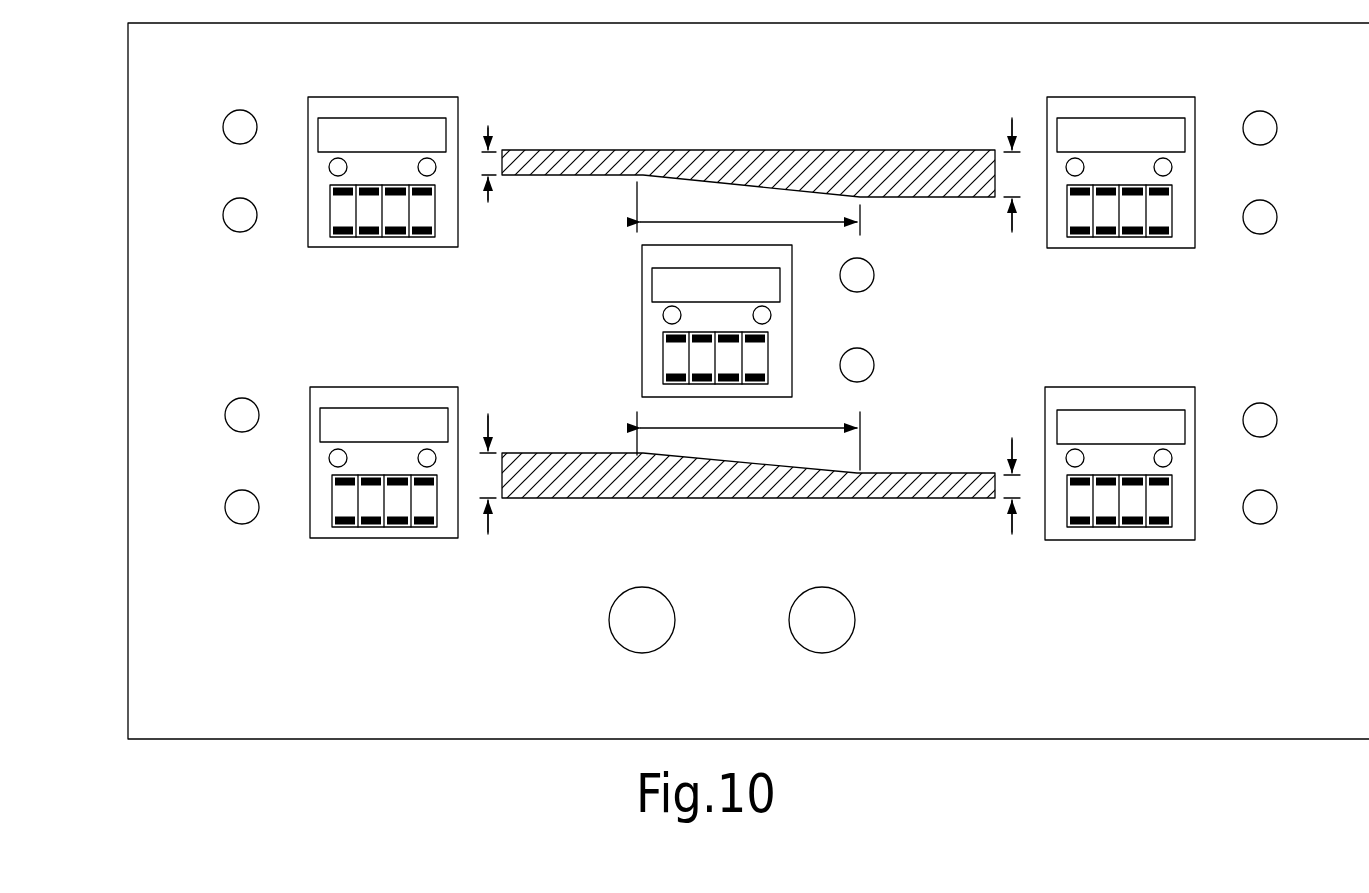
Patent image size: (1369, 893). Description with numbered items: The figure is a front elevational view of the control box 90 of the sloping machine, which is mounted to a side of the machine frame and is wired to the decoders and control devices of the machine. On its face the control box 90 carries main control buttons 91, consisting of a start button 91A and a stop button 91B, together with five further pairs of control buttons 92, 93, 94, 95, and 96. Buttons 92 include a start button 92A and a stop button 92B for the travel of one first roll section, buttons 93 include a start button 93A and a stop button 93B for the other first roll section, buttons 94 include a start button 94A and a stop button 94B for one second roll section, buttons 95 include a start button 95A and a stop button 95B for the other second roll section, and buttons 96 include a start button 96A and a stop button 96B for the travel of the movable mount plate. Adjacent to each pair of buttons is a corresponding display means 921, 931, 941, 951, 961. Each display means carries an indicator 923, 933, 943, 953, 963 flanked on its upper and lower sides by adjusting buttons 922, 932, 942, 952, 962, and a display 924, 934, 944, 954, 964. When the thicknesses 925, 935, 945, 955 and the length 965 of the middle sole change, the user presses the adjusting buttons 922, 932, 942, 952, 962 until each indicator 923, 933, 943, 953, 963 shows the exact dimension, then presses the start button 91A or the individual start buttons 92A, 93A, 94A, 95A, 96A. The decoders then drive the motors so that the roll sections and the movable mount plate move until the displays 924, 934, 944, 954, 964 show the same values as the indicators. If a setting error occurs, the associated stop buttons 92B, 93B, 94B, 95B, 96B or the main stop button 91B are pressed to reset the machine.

The control box 90 is at (110, 347).
The main control buttons 91 is at (862, 648).
The start button 91A is at (648, 605).
The stop button 91B is at (838, 600).
The control buttons 92 is at (212, 172).
The start button 92A is at (232, 120).
The stop button 92B is at (228, 220).
The display means 921 is at (428, 108).
The adjusting buttons 922 is at (437, 228).
The indicator 923 is at (333, 210).
The display 924 is at (440, 128).
The thickness 925 is at (506, 152).
The control buttons 93 is at (216, 460).
The start button 93A is at (250, 410).
The stop button 93B is at (228, 512).
The display means 931 is at (420, 398).
The adjusting buttons 932 is at (438, 520).
The indicator 933 is at (335, 500).
The display 934 is at (442, 420).
The thickness 935 is at (500, 452).
The control buttons 94 is at (1286, 175).
The start button 94A is at (1275, 122).
The stop button 94B is at (1275, 225).
The display means 941 is at (1168, 105).
The adjusting buttons 942 is at (1067, 230).
The indicator 943 is at (1173, 213).
The display 944 is at (1178, 128).
The thickness 945 is at (1008, 155).
The control buttons 95 is at (1290, 468).
The start button 95A is at (1272, 415).
The stop button 95B is at (1275, 515).
The display means 951 is at (1168, 398).
The adjusting buttons 952 is at (1067, 520).
The indicator 953 is at (1173, 508).
The display 954 is at (1180, 422).
The thickness 955 is at (1008, 475).
The control buttons 96 is at (876, 266).
The start button 96A is at (872, 282).
The stop button 96B is at (866, 365).
The display means 961 is at (645, 272).
The adjusting buttons 962 is at (768, 380).
The indicator 963 is at (667, 362).
The display 964 is at (655, 288).
The length 965 is at (763, 230).